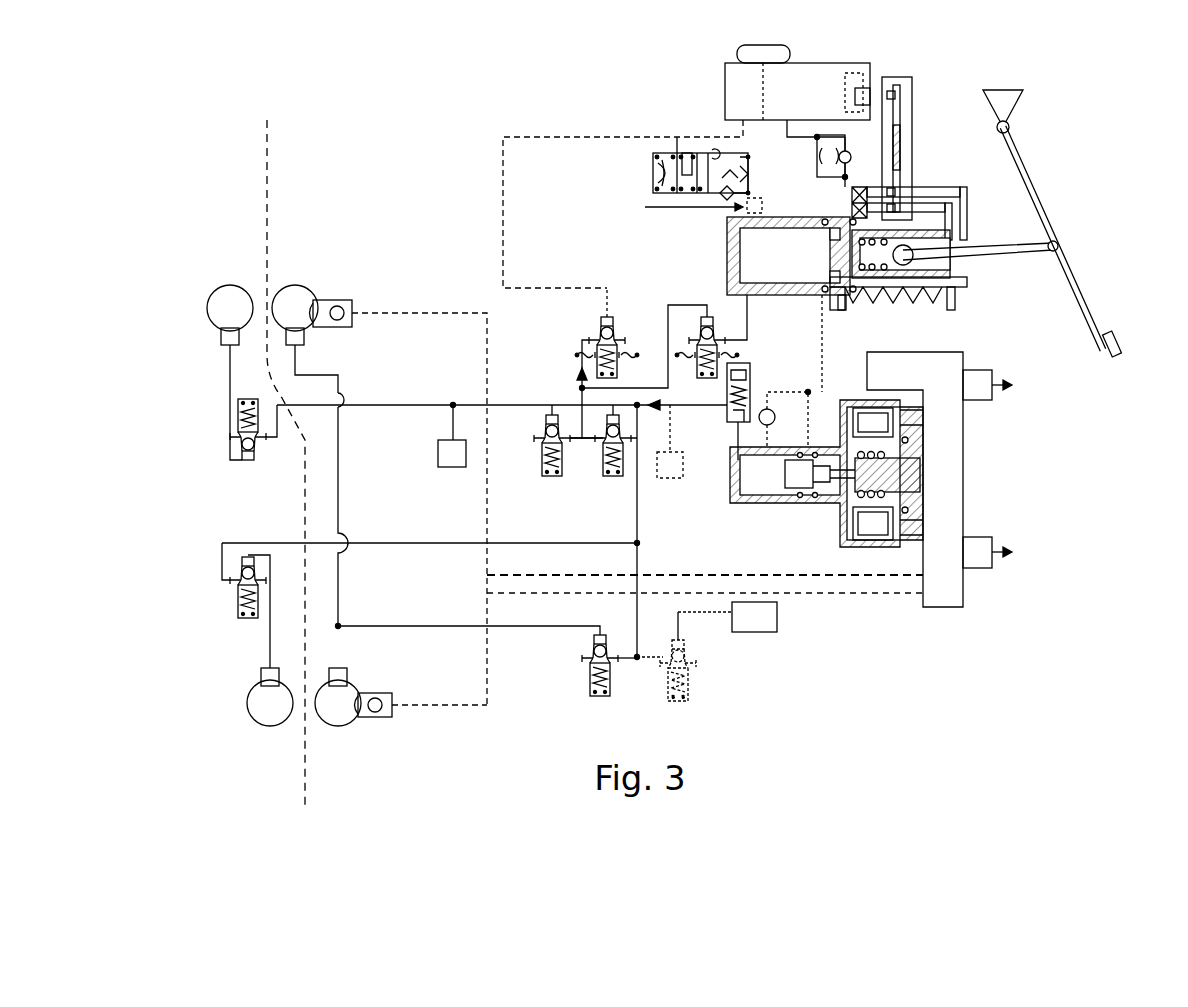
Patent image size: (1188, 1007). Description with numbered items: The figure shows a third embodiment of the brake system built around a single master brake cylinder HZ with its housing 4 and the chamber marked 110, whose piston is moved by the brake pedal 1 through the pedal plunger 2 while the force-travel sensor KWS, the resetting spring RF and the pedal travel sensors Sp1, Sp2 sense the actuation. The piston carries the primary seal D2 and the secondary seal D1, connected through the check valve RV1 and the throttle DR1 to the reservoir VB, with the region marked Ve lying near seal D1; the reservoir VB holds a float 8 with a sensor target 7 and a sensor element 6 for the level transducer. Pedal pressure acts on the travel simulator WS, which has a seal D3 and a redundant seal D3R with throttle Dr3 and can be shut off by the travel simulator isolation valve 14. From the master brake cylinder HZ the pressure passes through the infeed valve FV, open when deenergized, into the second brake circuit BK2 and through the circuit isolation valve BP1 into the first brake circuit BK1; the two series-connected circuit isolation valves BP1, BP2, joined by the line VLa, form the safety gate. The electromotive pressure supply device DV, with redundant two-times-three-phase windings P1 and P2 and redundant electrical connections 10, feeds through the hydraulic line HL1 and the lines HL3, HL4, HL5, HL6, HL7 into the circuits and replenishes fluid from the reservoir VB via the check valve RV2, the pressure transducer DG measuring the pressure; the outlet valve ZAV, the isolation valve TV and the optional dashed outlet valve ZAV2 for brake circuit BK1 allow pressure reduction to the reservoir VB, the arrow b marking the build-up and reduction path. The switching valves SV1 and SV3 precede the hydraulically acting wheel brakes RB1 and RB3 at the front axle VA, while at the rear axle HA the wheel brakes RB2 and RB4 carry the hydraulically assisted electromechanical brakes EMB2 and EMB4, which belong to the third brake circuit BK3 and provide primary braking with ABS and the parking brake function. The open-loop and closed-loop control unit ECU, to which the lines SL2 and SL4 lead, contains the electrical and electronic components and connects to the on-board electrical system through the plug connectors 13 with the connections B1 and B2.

The front axle VA is at (262, 465).
The rear axle HA is at (300, 196).
The wheel brake RB1 is at (255, 717).
The wheel brake RB2 is at (335, 717).
The wheel brake RB3 is at (230, 290).
The wheel brake RB4 is at (305, 290).
The hydraulically assisted electromechanical brake EMB2 is at (375, 693).
The hydraulically assisted electromechanical brake EMB4 is at (340, 300).
The switching valve SV1 is at (238, 622).
The switching valve SV3 is at (230, 412).
The first brake circuit BK1 is at (438, 545).
The second brake circuit BK2 is at (393, 405).
The third brake circuit BK3 is at (520, 628).
The hydraulic line connection HL1 is at (735, 470).
The hydraulic line connection HL3 is at (668, 348).
The hydraulic line connection HL4 is at (350, 545).
The hydraulic line connection HL5 is at (367, 407).
The hydraulic line HL6 is at (440, 628).
The hydraulic line HL7 is at (340, 497).
The pressure transducer DG is at (456, 467).
The isolation valve TV is at (612, 695).
The central outlet valve ZAV is at (615, 322).
The additional outlet valve ZAV2 is at (693, 675).
The redundant electrical connection 10 is at (577, 356).
The pressure build-up/reduction path b is at (575, 365).
The circuit isolation valve BP1 is at (620, 480).
The circuit isolation valve BP2 is at (550, 477).
The hydraulic line VLa is at (592, 445).
The infeed valve FV is at (727, 402).
The check valve RV2 is at (770, 408).
The check valve RV1 is at (850, 152).
The phase connection of redundant winding P1 is at (925, 420).
The phase connection of redundant winding P2 is at (915, 547).
The pressure supply device DV is at (878, 568).
The signal line SL4 is at (830, 575).
The signal line SL2 is at (852, 594).
The open-loop and closed-loop control unit ECU is at (915, 479).
The bus connection B1 is at (1004, 385).
The bus connection B2 is at (1004, 552).
The electrical plug connector 13 is at (975, 377).
The reservoir VB is at (860, 63).
The float 8 is at (850, 82).
The sensor target 7 is at (905, 82).
The sensor element for level transducer 6 is at (900, 95).
The pedal travel sensor Sp1 is at (896, 190).
The pedal travel sensor Sp2 is at (896, 207).
The seal D3 is at (686, 153).
The redundant seal D3R is at (678, 153).
The throttle Dr3 is at (655, 165).
The travel simulator WS is at (653, 185).
The travel simulator isolation valve 14 is at (685, 207).
The throttle DR1 is at (817, 158).
The secondary seal D1 is at (818, 217).
The volume Ve is at (828, 196).
The master brake cylinder HZ is at (727, 246).
The master cylinder chamber 110 is at (790, 257).
The master brake cylinder housing 4 is at (735, 266).
The force-travel sensor KWS is at (890, 240).
The resetting spring RF is at (890, 300).
The primary seal D2 is at (852, 300).
The pedal plunger 2 is at (1000, 257).
The brake pedal 1 is at (1122, 345).